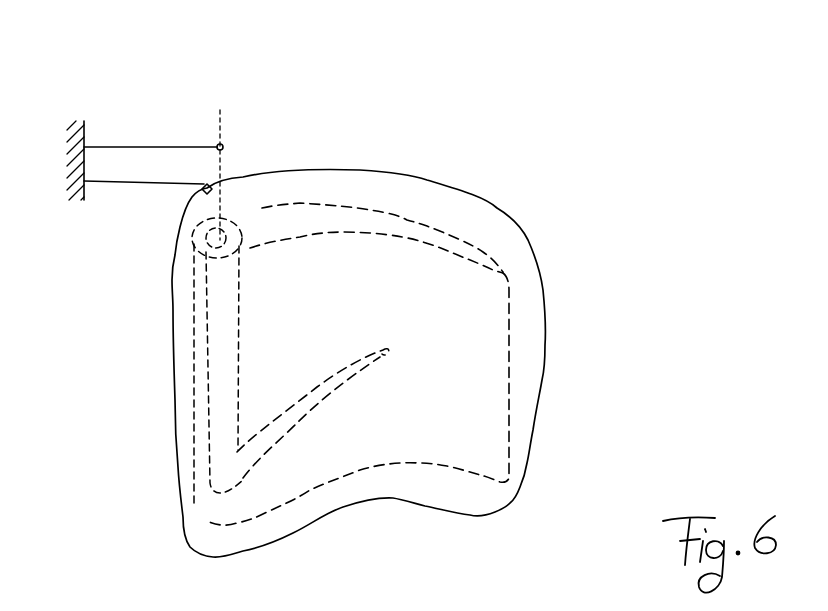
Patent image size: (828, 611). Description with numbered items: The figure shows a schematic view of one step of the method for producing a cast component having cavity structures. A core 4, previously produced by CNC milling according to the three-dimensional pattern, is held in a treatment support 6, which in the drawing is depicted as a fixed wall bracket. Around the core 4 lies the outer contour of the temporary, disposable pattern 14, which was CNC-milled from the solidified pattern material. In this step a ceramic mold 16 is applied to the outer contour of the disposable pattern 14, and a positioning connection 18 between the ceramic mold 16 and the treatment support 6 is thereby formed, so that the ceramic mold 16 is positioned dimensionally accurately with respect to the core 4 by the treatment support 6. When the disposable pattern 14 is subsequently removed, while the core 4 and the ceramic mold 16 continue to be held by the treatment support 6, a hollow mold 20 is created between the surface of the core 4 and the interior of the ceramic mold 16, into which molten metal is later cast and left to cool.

The treatment support 6 is at (135, 87).
The core 4 is at (224, 238).
The disposable pattern 14 is at (413, 220).
The ceramic mold 16 is at (498, 207).
The positioning connection 18 is at (203, 188).
The hollow mold 20 is at (450, 330).